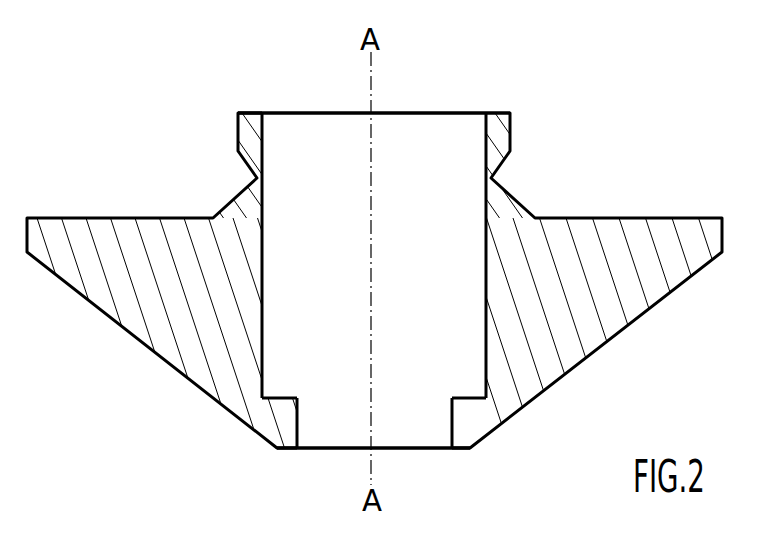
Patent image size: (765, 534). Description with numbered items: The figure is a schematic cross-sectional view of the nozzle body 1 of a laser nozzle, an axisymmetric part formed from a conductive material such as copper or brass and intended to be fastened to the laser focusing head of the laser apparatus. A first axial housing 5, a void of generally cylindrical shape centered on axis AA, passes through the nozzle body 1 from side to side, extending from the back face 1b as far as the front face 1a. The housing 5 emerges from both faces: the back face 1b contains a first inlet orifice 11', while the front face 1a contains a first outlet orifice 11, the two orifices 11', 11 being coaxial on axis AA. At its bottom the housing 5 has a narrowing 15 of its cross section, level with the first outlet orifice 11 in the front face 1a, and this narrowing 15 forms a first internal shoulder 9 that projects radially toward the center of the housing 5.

The nozzle body 1 is at (600, 289).
The front face 1a is at (283, 460).
The back face 1b is at (284, 106).
The first axial housing 5 is at (402, 283).
The first internal shoulder 9 is at (287, 388).
The first outlet orifice 11 is at (373, 489).
The first inlet orifice 11' is at (389, 79).
The narrowing 15 is at (465, 411).